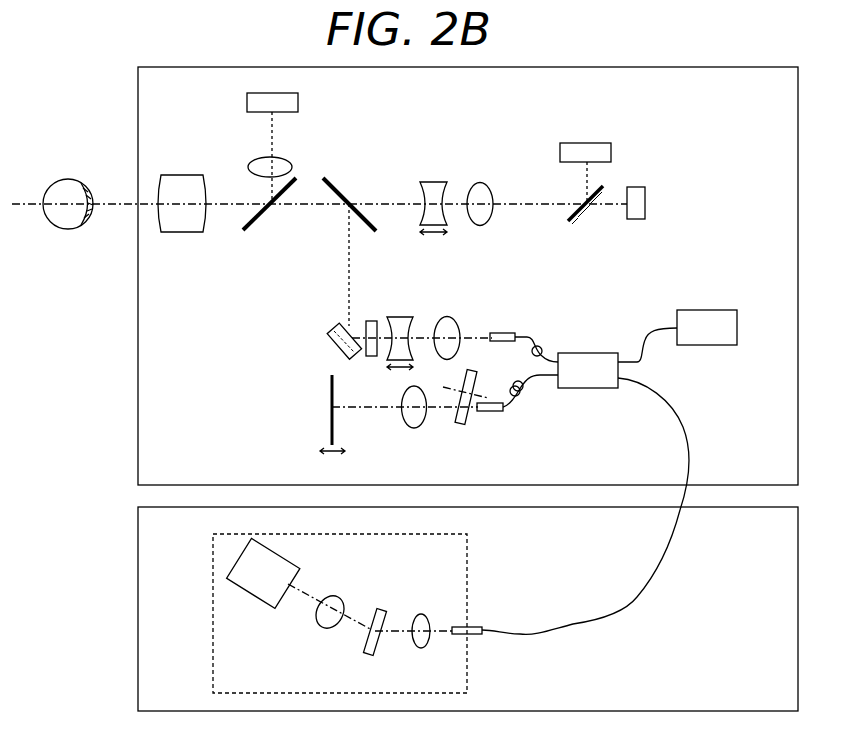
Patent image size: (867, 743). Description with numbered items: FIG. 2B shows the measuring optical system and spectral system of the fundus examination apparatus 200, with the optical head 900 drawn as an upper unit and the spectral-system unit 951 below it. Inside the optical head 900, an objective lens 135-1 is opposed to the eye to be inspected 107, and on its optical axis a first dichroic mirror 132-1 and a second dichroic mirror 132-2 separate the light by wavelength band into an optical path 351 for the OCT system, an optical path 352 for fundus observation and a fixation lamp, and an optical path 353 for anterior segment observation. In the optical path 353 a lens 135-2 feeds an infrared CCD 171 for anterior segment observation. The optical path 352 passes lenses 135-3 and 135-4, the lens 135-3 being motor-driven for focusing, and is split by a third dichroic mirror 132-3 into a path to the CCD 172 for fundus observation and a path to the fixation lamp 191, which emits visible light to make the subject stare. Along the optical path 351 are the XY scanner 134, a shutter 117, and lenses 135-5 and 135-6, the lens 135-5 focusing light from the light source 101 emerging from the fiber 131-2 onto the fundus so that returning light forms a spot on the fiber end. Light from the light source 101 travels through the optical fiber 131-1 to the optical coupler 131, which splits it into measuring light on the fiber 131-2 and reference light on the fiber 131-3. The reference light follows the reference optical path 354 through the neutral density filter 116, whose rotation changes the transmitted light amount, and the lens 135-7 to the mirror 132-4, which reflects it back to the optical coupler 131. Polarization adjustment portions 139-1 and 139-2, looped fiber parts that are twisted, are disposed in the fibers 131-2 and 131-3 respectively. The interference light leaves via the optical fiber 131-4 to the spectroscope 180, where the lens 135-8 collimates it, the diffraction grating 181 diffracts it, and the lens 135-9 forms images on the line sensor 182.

The ophthalmologic imaging apparatus 200 is at (111, 89).
The optical head 900 is at (137, 134).
The spectrometer unit 951 is at (137, 572).
The eye to be inspected 107 is at (68, 230).
The objective lens 135-1 is at (181, 233).
The lens 135-2 is at (247, 166).
The infrared CCD for anterior segment observation 171 is at (246, 100).
The optical path for anterior segment observation 353 is at (268, 128).
The first dichroic mirror 132-1 is at (255, 235).
The second dichroic mirror 132-2 is at (332, 176).
The optical path for fundus observation and fixation lamp 352 is at (386, 203).
The optical path of OCT optical system 351 is at (348, 242).
The lens 135-3 is at (430, 181).
The lens 135-4 is at (481, 182).
The CCD for fundus observation 172 is at (578, 143).
The third dichroic mirror 132-3 is at (604, 186).
The fixation lamp 191 is at (646, 204).
The XY scanner 134 is at (334, 330).
The shutter 117 is at (372, 357).
The lens 135-5 is at (400, 316).
The lens 135-6 is at (447, 316).
The mirror 132-4 is at (330, 406).
The reference optical path 354 is at (366, 410).
The lens 135-7 is at (419, 429).
The neutral density filter 116 is at (464, 426).
The optical coupler 131 is at (588, 370).
The light source 101 is at (707, 327).
The single-mode optical fiber 131-1 is at (657, 329).
The single-mode optical fiber 131-2 is at (537, 315).
The single-mode optical fiber 131-3 is at (542, 373).
The single-mode optical fiber 131-4 is at (661, 397).
The polarization adjustment portion on measuring light side 139-1 is at (543, 349).
The polarization adjustment portion on reference light side 139-2 is at (515, 385).
The spectroscope 180 is at (212, 564).
The line sensor 182 is at (263, 573).
The diffraction grating 181 is at (380, 609).
The lens 135-9 is at (321, 626).
The lens 135-8 is at (420, 648).